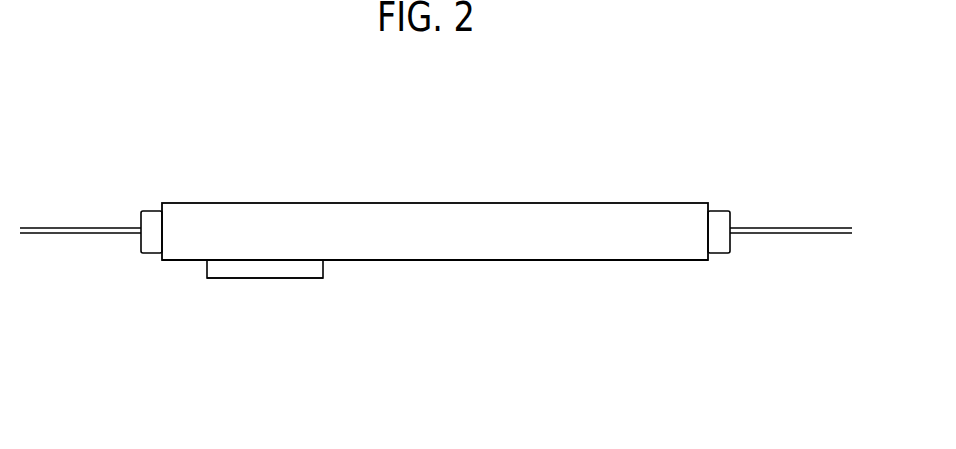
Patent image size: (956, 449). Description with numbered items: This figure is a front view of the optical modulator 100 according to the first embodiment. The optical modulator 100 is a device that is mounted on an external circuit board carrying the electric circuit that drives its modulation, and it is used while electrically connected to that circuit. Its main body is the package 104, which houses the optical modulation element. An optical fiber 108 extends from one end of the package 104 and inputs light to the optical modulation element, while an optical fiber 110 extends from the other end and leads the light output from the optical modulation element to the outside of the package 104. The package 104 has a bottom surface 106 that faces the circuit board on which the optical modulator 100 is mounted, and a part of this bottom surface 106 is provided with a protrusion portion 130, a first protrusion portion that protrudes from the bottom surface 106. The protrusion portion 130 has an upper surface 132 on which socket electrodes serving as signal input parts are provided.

The optical modulator 100 is at (616, 120).
The package 104 is at (435, 184).
The bottom surface 106 is at (435, 302).
The optical fiber 108 is at (91, 189).
The optical fiber 110 is at (780, 189).
The protrusion portion 130 is at (258, 308).
The upper surface 132 is at (265, 321).